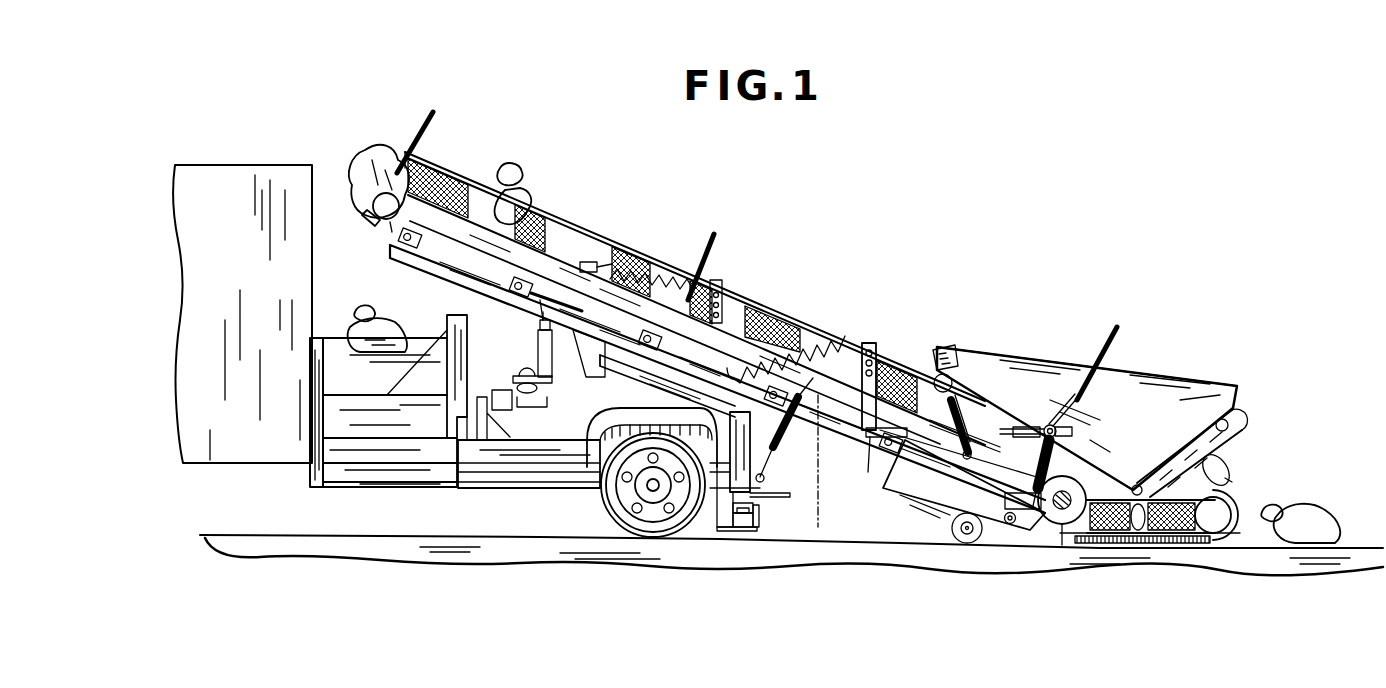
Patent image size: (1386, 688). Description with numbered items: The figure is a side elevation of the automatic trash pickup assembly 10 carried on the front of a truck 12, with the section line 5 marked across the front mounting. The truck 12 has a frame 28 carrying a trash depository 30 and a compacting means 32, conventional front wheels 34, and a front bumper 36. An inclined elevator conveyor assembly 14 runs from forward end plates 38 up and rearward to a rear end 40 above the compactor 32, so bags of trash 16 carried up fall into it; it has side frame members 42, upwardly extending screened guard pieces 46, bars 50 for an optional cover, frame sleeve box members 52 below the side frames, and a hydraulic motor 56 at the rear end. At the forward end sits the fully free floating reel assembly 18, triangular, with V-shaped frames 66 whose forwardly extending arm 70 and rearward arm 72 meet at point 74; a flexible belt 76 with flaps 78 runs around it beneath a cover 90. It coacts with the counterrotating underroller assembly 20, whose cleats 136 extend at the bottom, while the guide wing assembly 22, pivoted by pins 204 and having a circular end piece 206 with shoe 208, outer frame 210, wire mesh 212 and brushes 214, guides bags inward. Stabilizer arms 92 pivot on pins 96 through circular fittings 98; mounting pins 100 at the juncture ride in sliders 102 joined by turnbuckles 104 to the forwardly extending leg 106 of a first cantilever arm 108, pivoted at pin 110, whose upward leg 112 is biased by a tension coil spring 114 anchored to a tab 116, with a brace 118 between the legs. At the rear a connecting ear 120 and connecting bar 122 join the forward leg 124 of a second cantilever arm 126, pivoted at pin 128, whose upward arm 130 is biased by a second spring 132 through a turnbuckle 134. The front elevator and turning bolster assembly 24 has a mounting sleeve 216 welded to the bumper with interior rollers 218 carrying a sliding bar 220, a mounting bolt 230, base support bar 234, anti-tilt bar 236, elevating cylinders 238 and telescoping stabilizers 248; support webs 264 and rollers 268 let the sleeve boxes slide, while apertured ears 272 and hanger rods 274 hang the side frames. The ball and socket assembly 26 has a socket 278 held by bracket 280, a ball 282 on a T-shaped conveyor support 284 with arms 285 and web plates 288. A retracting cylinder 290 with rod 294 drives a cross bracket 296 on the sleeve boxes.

The automatic trash pickup assembly 10 is at (732, 348).
The truck 12 is at (305, 487).
The inclined elevator conveyor assembly 14 is at (717, 289).
The bags of trash 16 is at (386, 160).
The fully free floating reel assembly 18 is at (1094, 421).
The counterrotating underroller assembly 20 is at (1047, 549).
The guide wing assembly 22 is at (1108, 545).
The front elevator and turning bolster assembly 24 is at (772, 468).
The ball and socket assembly 26 is at (502, 372).
The frame 28 is at (511, 482).
The trash storage area or depository 30 is at (200, 325).
The compressing or compacting means 32 is at (363, 350).
The front wheels 34 is at (651, 517).
The front bumper 36 is at (719, 527).
The forward end plates 38 is at (922, 495).
The rear end 40 is at (441, 150).
The side frame members 42 is at (547, 267).
The screened guard pieces 46 is at (551, 226).
The upwardly extending bars 50 is at (426, 115).
The frame sleeve box members 52 is at (695, 364).
The hydraulic motor 56 is at (383, 214).
The V-shaped frame 66 is at (1220, 453).
The forwardly extending arm 70 is at (1232, 441).
The rearward arm 72 is at (992, 427).
The juncture point 74 is at (1145, 492).
The flexible belt 76 is at (1226, 470).
The flexible flaps or cleats 78 is at (1232, 482).
The cover 90 is at (1078, 364).
The stabilizer arm 92 is at (1119, 335).
The pivot pin 96 is at (1004, 517).
The circular fitting 98 is at (1005, 498).
The mounting pin 100 is at (1050, 425).
The slider 102 is at (1072, 431).
The adjustable turnbuckle 104 is at (990, 418).
The forwardly extending leg 106 is at (972, 455).
The first cantilever arm 108 is at (963, 471).
The pivot pin 110 is at (869, 440).
The upwardly extending leg portion 112 is at (876, 353).
The tension coil spring 114 is at (866, 348).
The tab 116 is at (728, 372).
The brace 118 is at (905, 382).
The connecting ear 120 is at (953, 388).
The connecting bar 122 is at (950, 349).
The forwardly extending leg 124 is at (816, 345).
The second cantilever arm 126 is at (779, 319).
The pivot pin 128 is at (743, 309).
The upwardly extending arm 130 is at (722, 286).
The second tension coil spring 132 is at (663, 266).
The adjusting turnbuckle 134 is at (597, 263).
The extending and retracting cleats or blades 136 is at (1062, 527).
The pivot pins 204 is at (1103, 472).
The circular end piece 206 is at (1212, 518).
The outer peripheral shoe 208 is at (1233, 532).
The outer frame 210 is at (1176, 498).
The wire mesh 212 is at (1158, 550).
The brushes 214 is at (1113, 544).
The box-like bolster or mounting sleeve 216 is at (737, 531).
The interior rollers 218 is at (756, 522).
The sliding bar 220 is at (745, 520).
The mounting bolt 230 is at (756, 512).
The base support bar 234 is at (778, 494).
The anti-tilt bar 236 is at (758, 502).
The elevating hydraulic cylinders 238 is at (770, 458).
The telescoping stabilizers 248 is at (780, 453).
The support webs 264 is at (455, 316).
The rollers 268 is at (519, 280).
The upstanding apertured ears 272 is at (422, 238).
The hanger rods 274 is at (538, 289).
The socket 278 is at (528, 410).
The bracket 280 is at (492, 393).
The ball 282 is at (540, 387).
The conveyor support 284 is at (538, 358).
The outwardly extending arms 285 is at (538, 338).
The web plate 288 is at (532, 322).
The retracting cylinder 290 is at (667, 391).
The cylinder rod 294 is at (617, 373).
The cross bracket 296 is at (590, 366).
The section line 5 is at (821, 405).